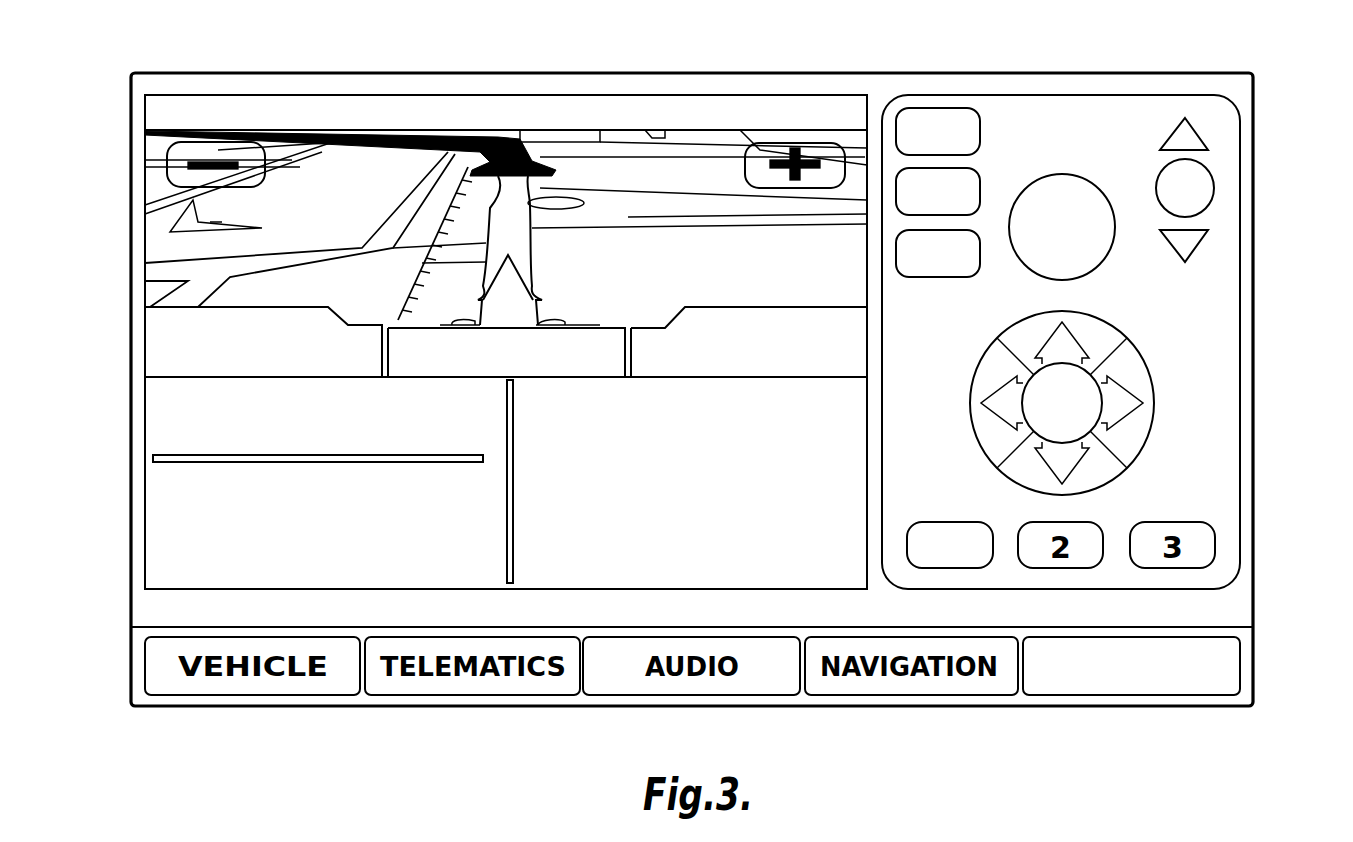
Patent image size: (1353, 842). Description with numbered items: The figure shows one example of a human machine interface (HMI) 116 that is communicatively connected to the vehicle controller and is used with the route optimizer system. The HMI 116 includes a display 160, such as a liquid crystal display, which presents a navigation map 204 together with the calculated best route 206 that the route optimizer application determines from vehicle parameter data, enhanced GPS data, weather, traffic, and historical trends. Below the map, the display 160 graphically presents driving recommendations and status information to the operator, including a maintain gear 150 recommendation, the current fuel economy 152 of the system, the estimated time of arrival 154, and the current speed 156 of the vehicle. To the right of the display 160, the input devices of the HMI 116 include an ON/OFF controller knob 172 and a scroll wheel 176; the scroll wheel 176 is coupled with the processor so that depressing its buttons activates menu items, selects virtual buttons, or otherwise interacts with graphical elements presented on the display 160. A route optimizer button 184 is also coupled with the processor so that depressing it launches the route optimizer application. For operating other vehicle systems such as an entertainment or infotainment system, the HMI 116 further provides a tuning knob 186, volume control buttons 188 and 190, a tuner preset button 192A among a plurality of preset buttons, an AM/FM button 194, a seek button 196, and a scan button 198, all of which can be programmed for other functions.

The human machine interface 116 is at (198, 728).
The maintain gear recommendation 150 is at (150, 501).
The current fuel economy 152 is at (638, 433).
The estimated time of arrival 154 is at (202, 346).
The current speed 156 is at (150, 401).
The display 160 is at (712, 95).
The ON/OFF controller knob 172 is at (1214, 188).
The scroll wheel 176 is at (1150, 343).
The route optimizer button 184 is at (1243, 660).
The tuning knob 186 is at (1070, 177).
The volume control button 188 is at (1208, 132).
The volume control button 190 is at (1200, 246).
The tuner preset button 192A is at (980, 555).
The AM/FM button 194 is at (943, 110).
The seek button 196 is at (975, 177).
The scan button 198 is at (975, 240).
The navigation map 204 is at (548, 115).
The calculated best route 206 is at (402, 138).